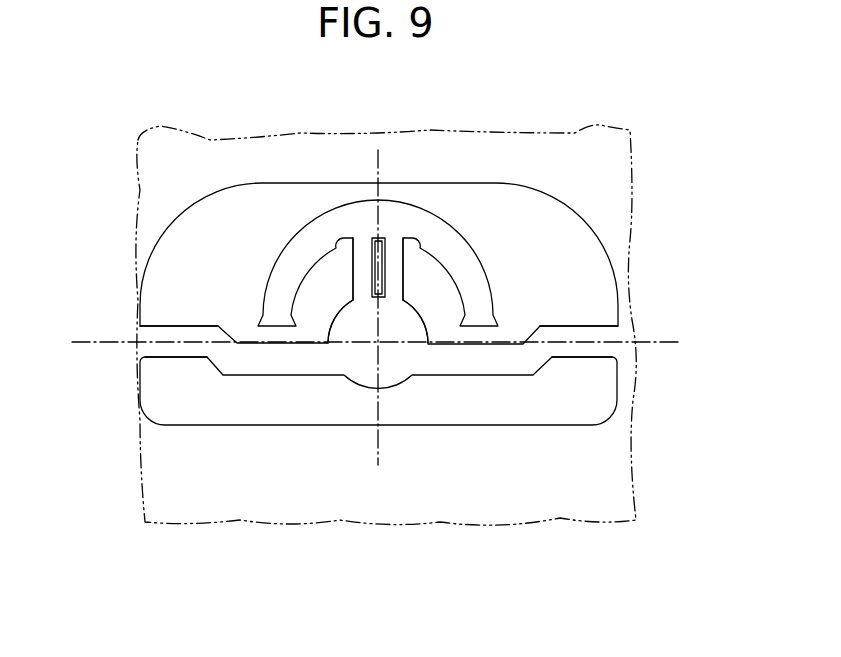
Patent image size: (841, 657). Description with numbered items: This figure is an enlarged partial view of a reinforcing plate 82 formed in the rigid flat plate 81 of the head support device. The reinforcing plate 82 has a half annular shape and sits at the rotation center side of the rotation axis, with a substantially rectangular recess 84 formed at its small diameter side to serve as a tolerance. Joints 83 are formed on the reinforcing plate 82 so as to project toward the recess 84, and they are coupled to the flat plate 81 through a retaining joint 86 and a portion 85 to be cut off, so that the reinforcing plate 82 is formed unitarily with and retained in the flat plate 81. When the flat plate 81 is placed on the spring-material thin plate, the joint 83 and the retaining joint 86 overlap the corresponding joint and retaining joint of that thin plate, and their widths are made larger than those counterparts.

The flat plate 81 is at (598, 472).
The reinforcing plate 82 is at (457, 265).
The joint 83 is at (363, 283).
The recess 84 is at (412, 245).
The portion to be cut-off 85 is at (358, 327).
The retaining joint 86 is at (577, 347).